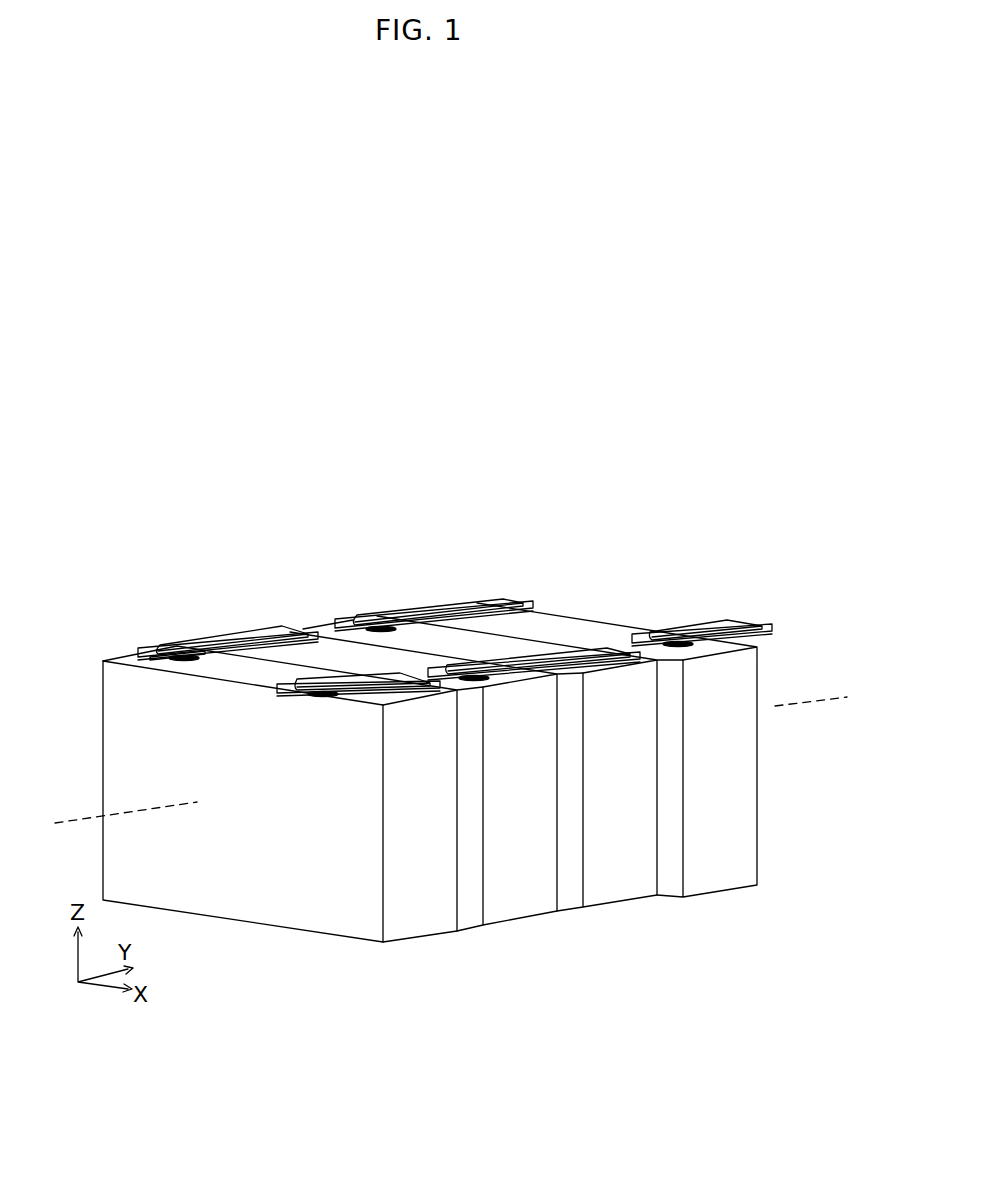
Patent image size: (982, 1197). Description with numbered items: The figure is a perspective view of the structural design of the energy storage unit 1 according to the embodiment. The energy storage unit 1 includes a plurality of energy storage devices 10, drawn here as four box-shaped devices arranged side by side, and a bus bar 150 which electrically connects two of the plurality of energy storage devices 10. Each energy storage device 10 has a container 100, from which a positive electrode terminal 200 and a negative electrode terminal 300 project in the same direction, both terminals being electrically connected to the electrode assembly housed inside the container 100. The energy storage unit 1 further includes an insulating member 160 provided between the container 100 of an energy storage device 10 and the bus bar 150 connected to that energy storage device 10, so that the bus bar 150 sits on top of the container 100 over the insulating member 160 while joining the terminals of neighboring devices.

The energy storage unit 1 is at (451, 735).
The energy storage device 10 is at (451, 803).
The container 100 is at (347, 918).
The bus bar 150 is at (245, 632).
The insulating member 160 is at (150, 650).
The positive electrode terminal 200 is at (207, 654).
The negative electrode terminal 300 is at (373, 677).